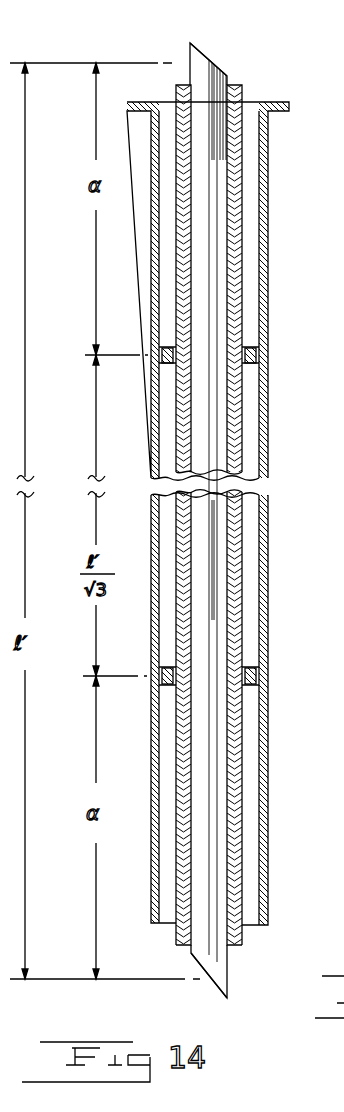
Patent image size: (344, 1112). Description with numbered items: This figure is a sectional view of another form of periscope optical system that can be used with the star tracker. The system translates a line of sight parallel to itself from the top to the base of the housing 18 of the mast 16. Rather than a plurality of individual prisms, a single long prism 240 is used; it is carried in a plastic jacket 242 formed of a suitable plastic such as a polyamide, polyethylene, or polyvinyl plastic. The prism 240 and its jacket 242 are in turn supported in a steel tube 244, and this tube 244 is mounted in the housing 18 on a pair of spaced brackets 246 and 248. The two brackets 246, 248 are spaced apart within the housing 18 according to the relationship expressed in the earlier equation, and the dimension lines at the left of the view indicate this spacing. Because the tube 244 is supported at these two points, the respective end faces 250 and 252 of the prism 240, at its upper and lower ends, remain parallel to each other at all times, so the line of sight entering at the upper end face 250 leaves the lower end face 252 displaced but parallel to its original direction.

The mast 16 is at (284, 579).
The housing 18 is at (268, 640).
The prism 240 is at (218, 733).
The plastic jacket 242 is at (235, 187).
The steel tube 244 is at (242, 310).
The bracket 246 is at (255, 348).
The bracket 248 is at (258, 680).
The end face 250 is at (212, 63).
The end face 252 is at (217, 988).